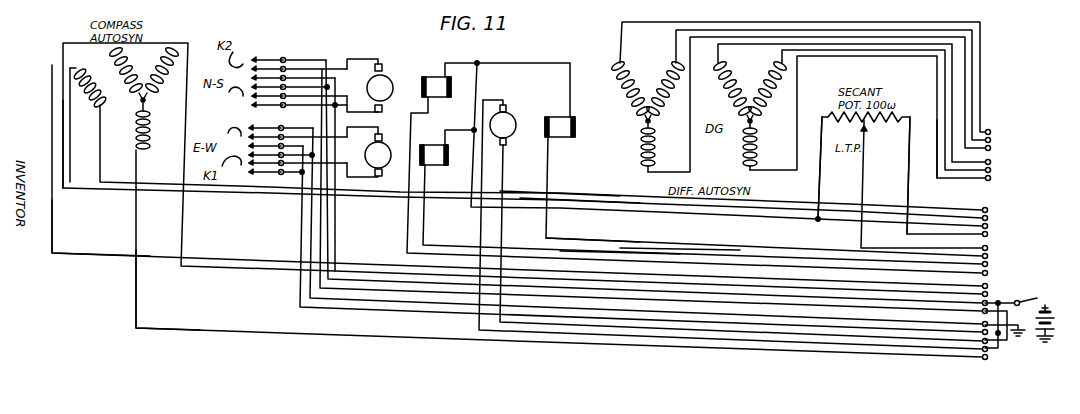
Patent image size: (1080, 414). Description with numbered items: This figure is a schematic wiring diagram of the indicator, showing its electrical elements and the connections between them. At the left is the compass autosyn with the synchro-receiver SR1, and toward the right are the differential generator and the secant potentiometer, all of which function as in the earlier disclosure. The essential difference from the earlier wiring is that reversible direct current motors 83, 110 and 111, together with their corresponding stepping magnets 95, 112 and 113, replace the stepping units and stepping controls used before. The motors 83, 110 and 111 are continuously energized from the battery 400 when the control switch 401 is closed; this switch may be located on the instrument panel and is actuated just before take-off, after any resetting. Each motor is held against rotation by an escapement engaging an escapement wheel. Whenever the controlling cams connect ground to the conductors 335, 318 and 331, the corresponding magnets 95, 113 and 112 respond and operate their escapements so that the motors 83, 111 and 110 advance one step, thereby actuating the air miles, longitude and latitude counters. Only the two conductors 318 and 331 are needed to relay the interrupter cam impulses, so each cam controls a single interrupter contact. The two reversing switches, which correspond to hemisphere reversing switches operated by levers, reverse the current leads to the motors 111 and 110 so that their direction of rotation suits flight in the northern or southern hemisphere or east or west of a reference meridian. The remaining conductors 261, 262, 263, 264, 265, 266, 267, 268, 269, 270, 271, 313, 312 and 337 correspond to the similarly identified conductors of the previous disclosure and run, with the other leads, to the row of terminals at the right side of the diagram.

The synchro-receiver SR1 is at (80, 94).
The reversible direct current motor 83 is at (509, 118).
The stepping magnet 95 is at (578, 127).
The reversible direct current motor 110 is at (386, 80).
The reversible direct current motor 111 is at (386, 162).
The stepping magnet 112 is at (437, 99).
The stepping magnet 113 is at (435, 166).
The conductor 261 is at (654, 24).
The conductor 262 is at (700, 31).
The conductor 263 is at (748, 38).
The conductor 264 is at (796, 44).
The conductor 265 is at (845, 50).
The conductor 266 is at (893, 56).
The conductor 267 is at (136, 292).
The conductor 268 is at (78, 253).
The conductor 269 is at (82, 188).
The conductor 270 is at (556, 193).
The conductor 271 is at (590, 199).
The conductor 312 is at (937, 172).
The conductor 313 is at (819, 216).
The conductor 318 is at (612, 258).
The conductor 331 is at (570, 248).
The conductor 335 is at (673, 252).
The conductor 337 is at (907, 182).
The battery 400 is at (1050, 305).
The control switch 401 is at (1030, 298).